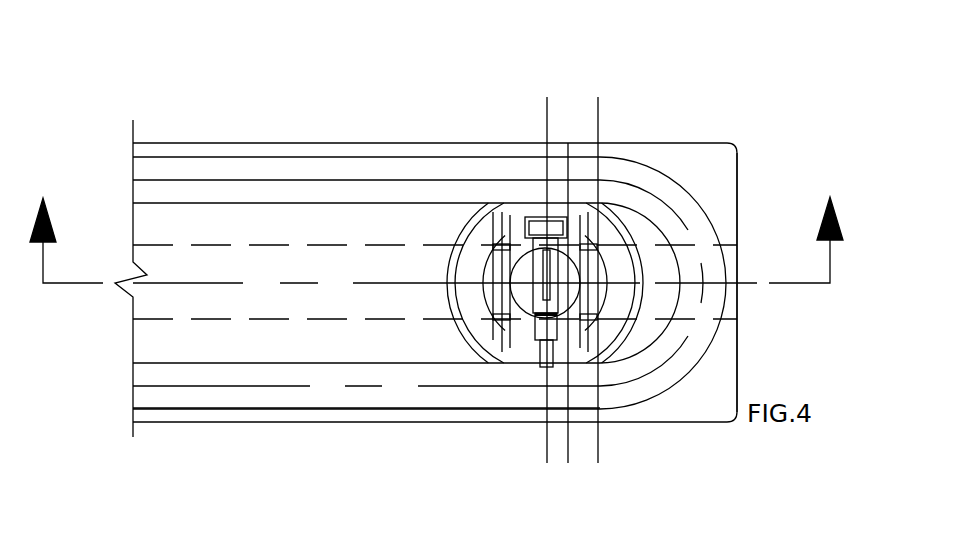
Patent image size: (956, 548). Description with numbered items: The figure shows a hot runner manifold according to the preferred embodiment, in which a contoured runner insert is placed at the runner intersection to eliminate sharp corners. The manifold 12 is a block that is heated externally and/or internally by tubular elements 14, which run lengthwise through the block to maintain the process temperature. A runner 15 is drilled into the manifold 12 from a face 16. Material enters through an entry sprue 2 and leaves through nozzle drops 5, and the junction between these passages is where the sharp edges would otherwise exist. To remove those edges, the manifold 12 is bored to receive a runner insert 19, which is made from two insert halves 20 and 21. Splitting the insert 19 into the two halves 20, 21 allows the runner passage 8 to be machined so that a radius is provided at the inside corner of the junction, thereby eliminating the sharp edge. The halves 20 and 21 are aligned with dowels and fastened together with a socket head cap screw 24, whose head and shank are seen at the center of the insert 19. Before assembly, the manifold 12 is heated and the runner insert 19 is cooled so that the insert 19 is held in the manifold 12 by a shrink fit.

The entry sprue 2 is at (443, 398).
The nozzle drops 5 is at (443, 240).
The runner passage 8 is at (565, 215).
The manifold 12 is at (733, 145).
The tubular elements 14 is at (325, 397).
The runner 15 is at (145, 304).
The face 16 is at (738, 354).
The runner insert 19 is at (463, 233).
The insert half 20 is at (508, 213).
The insert half 21 is at (528, 335).
The socket head cap screw 24 is at (552, 215).